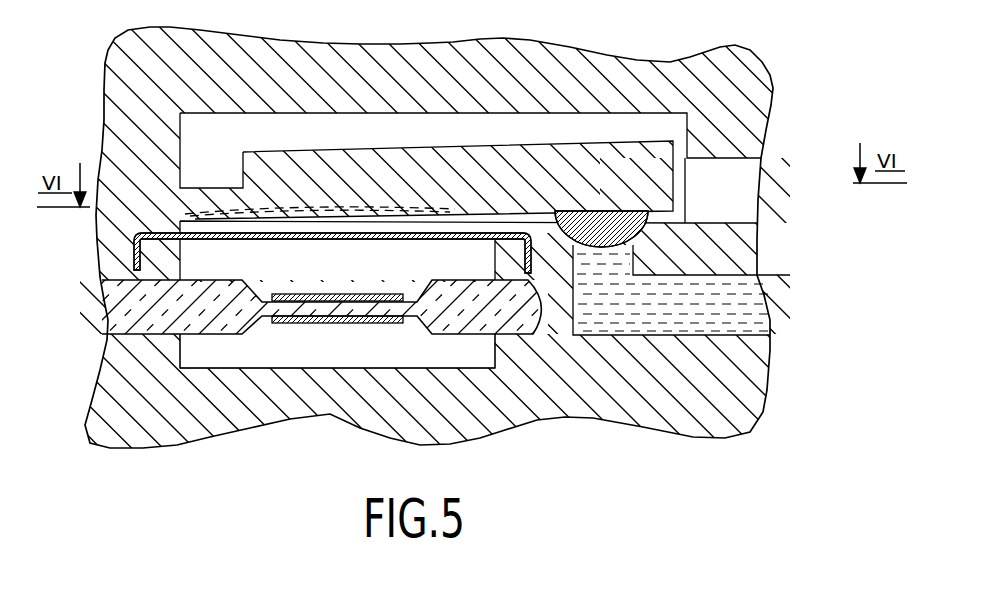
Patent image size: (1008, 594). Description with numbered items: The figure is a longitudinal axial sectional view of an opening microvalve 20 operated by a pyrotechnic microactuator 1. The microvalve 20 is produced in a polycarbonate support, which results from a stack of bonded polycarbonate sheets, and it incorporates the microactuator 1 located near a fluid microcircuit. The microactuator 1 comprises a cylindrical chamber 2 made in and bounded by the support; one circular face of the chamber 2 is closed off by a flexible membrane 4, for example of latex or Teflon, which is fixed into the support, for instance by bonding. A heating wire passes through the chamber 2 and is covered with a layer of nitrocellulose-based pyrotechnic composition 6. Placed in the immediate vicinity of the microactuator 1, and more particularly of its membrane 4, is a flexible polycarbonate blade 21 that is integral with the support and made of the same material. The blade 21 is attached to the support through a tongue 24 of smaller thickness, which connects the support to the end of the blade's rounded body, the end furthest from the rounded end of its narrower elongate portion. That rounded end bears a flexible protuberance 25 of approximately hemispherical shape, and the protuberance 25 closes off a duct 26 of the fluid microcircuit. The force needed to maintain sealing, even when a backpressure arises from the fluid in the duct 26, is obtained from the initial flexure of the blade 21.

The opening microvalve 20 is at (778, 88).
The flexible polycarbonate blade 21 is at (517, 160).
The tongue 24 is at (205, 193).
The flexible protuberance 25 is at (647, 212).
The duct 26 is at (763, 313).
The flexible membrane 4 is at (328, 239).
The microactuator 1 is at (214, 358).
The pyrotechnic composition 6 is at (307, 324).
The chamber 2 is at (353, 343).